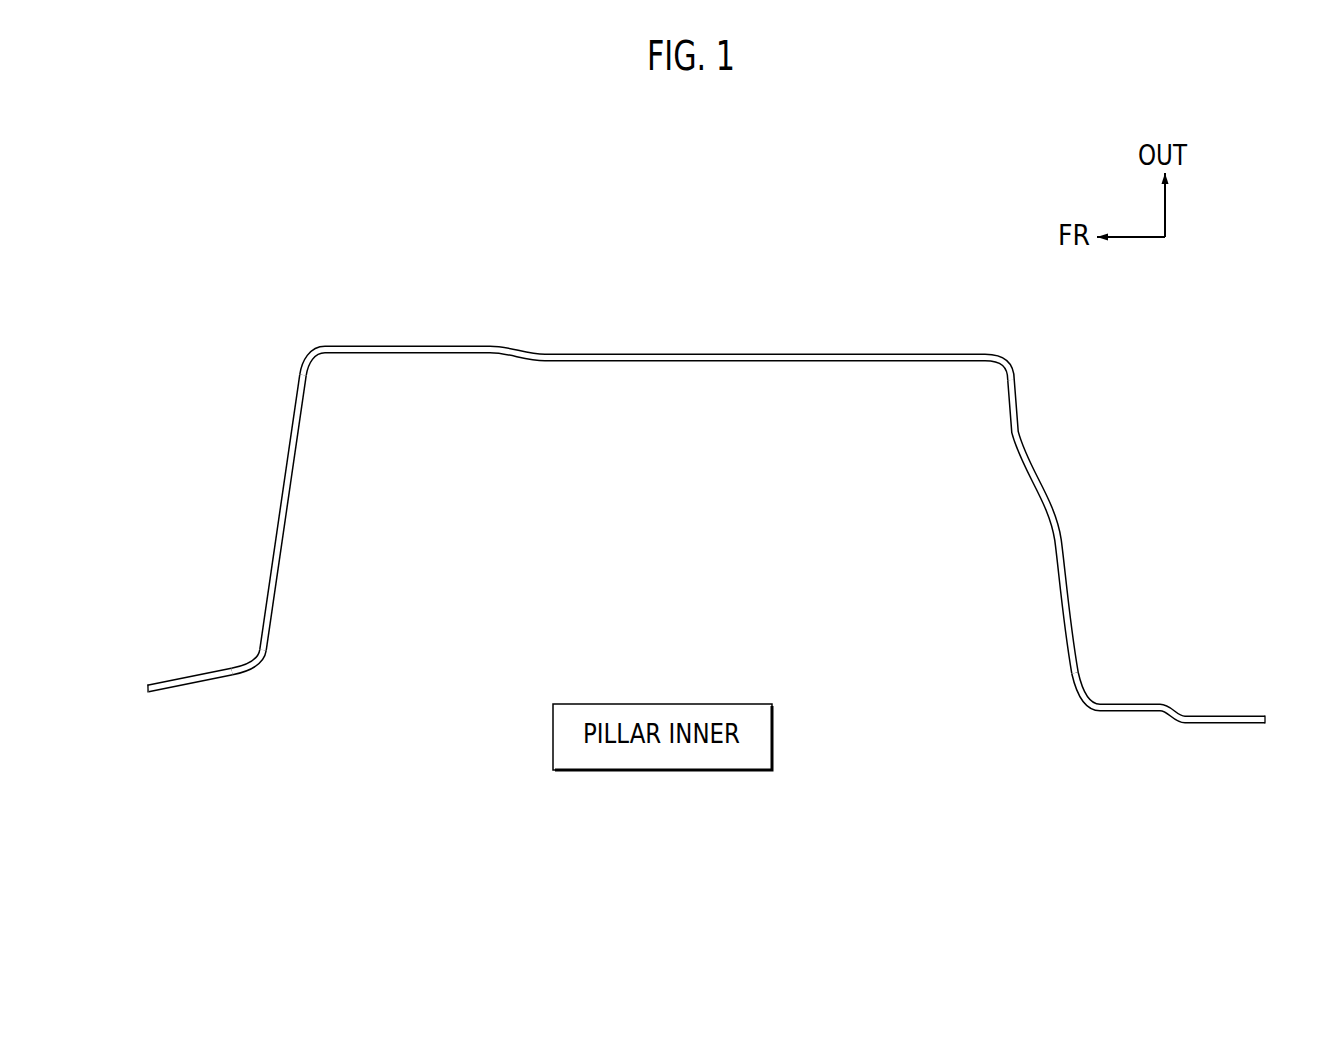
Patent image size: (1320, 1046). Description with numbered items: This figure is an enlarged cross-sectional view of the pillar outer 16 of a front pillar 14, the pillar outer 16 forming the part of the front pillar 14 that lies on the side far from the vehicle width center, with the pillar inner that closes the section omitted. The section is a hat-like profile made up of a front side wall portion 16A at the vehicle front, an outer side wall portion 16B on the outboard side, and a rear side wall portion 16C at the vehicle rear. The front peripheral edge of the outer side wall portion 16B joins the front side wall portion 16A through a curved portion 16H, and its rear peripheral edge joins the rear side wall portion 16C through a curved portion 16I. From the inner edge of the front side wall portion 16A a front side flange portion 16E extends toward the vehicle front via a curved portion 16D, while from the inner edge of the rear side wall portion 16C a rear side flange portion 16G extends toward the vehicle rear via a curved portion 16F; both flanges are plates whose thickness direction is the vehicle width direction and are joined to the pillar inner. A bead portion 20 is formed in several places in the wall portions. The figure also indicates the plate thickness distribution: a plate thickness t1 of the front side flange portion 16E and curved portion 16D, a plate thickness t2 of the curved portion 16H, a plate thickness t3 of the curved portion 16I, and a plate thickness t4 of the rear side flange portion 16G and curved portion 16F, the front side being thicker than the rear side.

The front pillar 14 is at (698, 461).
The pillar outer 16 is at (868, 323).
The front side wall portion 16A is at (288, 502).
The outer side wall portion 16B is at (690, 361).
The rear side wall portion 16C is at (1048, 551).
The curved portion 16D is at (263, 653).
The front side flange portion 16E is at (180, 679).
The curved portion 16F is at (1092, 698).
The rear side flange portion 16G is at (1243, 714).
The curved portion 16H is at (318, 360).
The curved portion 16I is at (992, 366).
The bead portion 20 is at (393, 347).
The plate thickness t1 is at (272, 688).
The plate thickness t2 is at (333, 380).
The plate thickness t3 is at (980, 385).
The plate thickness t4 is at (1062, 710).